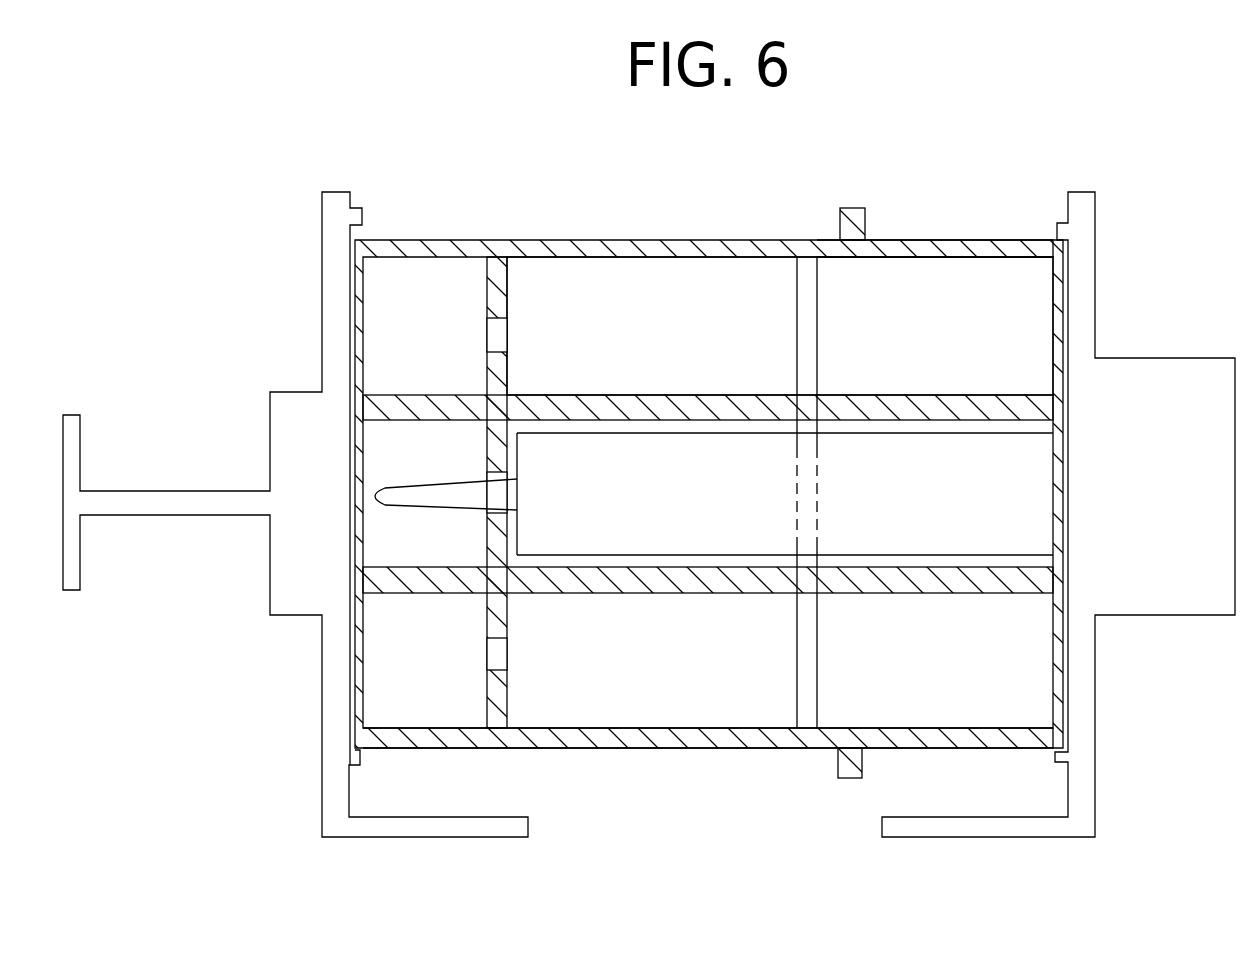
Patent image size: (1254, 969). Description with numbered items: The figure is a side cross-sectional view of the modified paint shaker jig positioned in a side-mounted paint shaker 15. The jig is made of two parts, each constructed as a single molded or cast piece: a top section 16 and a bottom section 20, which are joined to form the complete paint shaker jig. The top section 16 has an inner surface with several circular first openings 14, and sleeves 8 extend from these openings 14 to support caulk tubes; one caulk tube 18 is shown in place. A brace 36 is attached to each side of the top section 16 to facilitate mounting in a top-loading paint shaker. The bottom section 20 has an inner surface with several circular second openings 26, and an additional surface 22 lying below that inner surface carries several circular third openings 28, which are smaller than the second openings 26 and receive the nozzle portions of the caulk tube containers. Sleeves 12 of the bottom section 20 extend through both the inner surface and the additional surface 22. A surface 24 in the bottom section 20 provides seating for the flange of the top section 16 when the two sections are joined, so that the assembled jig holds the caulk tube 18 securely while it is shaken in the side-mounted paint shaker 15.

The sleeves 8 is at (965, 407).
The sleeves 12 is at (574, 407).
The first openings 14 is at (930, 255).
The side-mounted paint shaker 15 is at (296, 592).
The top section 16 is at (903, 768).
The caulk tube 18 is at (593, 557).
The bottom section 20 is at (692, 762).
The additional surface 22 is at (493, 297).
The surface 24 is at (803, 683).
The second openings 26 is at (658, 250).
The third openings 28 is at (496, 322).
The brace 36 is at (848, 212).